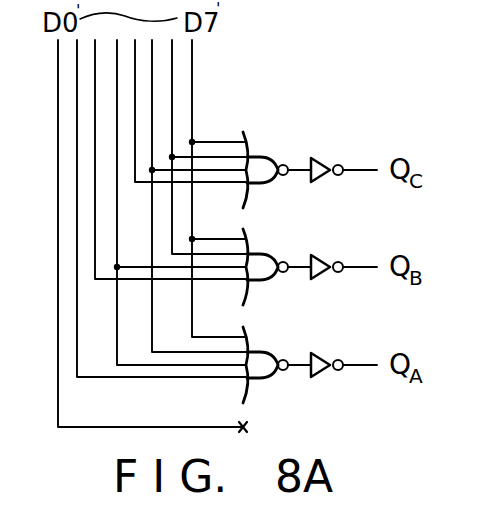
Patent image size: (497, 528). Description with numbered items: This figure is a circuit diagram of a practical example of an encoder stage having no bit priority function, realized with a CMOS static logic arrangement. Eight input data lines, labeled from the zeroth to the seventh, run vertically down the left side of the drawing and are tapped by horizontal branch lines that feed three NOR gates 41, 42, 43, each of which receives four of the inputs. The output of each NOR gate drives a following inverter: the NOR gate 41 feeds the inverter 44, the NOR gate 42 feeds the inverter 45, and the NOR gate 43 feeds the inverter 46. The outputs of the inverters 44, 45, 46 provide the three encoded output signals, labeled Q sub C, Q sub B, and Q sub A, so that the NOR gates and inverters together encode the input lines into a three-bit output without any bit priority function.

The NOR gate 41 is at (267, 152).
The NOR gate 42 is at (268, 253).
The NOR gate 43 is at (268, 350).
The inverter 44 is at (328, 162).
The inverter 45 is at (328, 259).
The inverter 46 is at (328, 356).